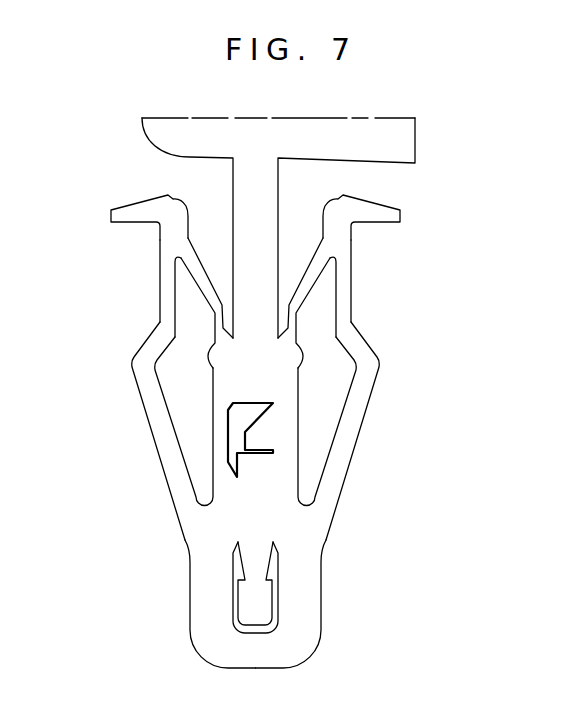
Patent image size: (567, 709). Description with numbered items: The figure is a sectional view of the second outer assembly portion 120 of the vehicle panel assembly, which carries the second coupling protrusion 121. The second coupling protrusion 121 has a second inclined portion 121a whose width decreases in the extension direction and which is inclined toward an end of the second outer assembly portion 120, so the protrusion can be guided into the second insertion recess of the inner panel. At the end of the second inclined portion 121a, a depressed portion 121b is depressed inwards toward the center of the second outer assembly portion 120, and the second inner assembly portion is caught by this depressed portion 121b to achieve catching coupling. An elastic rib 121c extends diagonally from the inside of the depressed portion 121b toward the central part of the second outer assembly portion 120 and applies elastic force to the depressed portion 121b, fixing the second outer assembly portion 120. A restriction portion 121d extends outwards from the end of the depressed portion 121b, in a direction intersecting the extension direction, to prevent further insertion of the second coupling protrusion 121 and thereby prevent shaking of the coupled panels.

The second outer assembly portion 120 is at (470, 685).
The second coupling protrusion 121 is at (360, 525).
The second inclined portion 121a is at (155, 422).
The depressed portion 121b is at (168, 258).
The elastic rib 121c is at (307, 283).
The restriction portion 121d is at (131, 206).